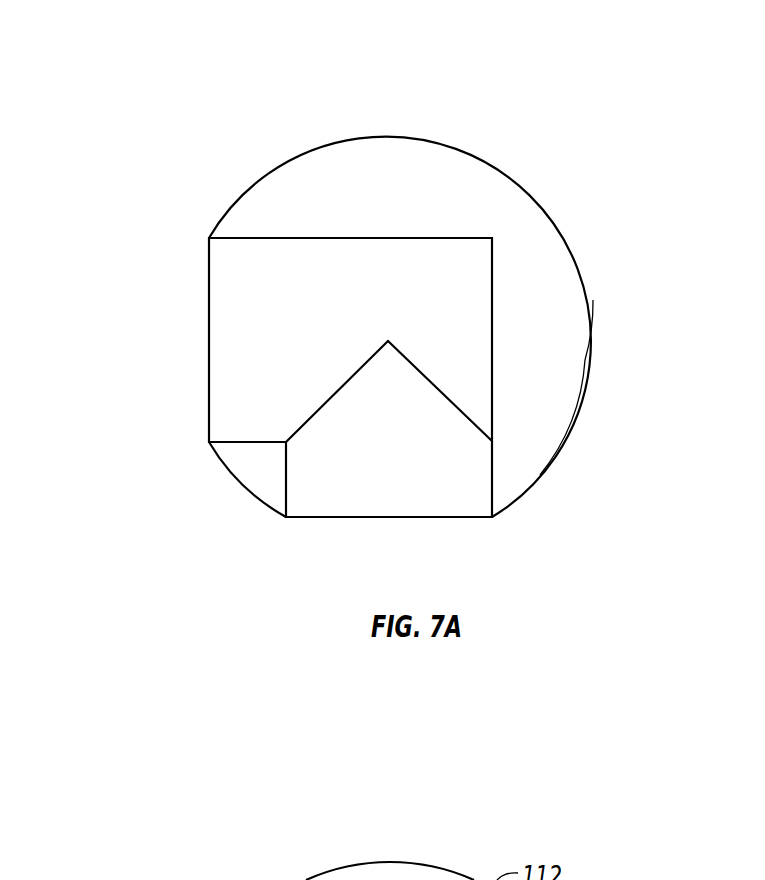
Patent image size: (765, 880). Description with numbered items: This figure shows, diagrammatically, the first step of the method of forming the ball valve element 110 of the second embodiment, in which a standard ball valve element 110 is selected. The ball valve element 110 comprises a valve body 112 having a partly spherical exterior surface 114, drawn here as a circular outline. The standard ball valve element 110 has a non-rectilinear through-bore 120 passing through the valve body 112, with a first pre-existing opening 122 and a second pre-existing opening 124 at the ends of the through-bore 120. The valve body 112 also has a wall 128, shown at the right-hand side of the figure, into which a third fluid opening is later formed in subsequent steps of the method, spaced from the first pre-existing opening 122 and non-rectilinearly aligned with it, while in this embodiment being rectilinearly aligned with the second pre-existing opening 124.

The ball valve element 110 is at (168, 45).
The valve body 112 is at (493, 163).
The partly spherical exterior surface 114 is at (594, 315).
The non-rectilinear through-bore 120 is at (227, 300).
The first pre-existing opening 122 is at (349, 506).
The second pre-existing opening 124 is at (236, 365).
The wall 128 is at (558, 423).